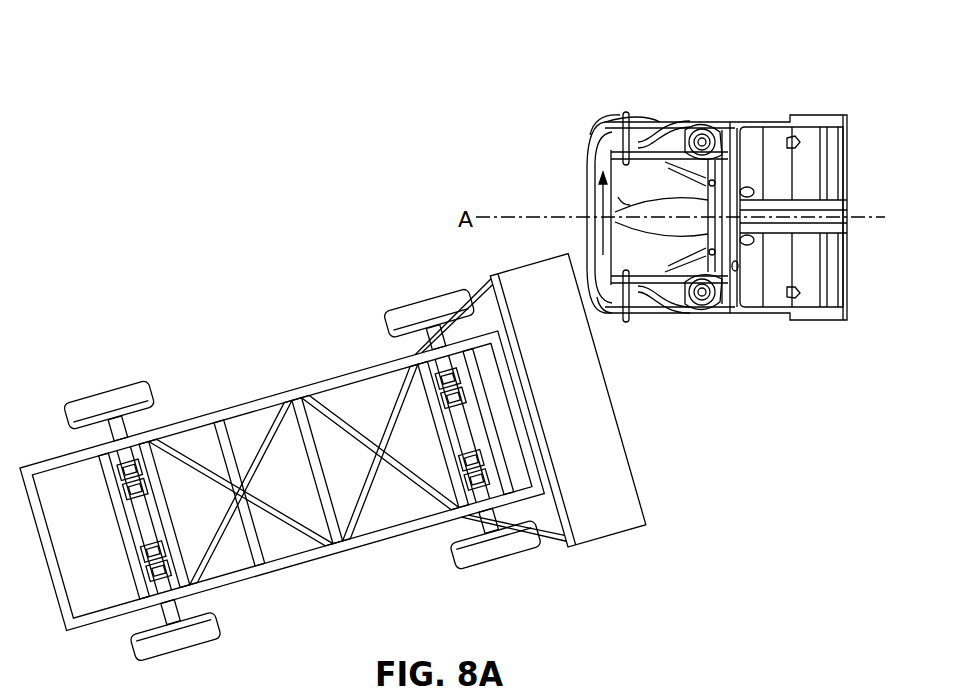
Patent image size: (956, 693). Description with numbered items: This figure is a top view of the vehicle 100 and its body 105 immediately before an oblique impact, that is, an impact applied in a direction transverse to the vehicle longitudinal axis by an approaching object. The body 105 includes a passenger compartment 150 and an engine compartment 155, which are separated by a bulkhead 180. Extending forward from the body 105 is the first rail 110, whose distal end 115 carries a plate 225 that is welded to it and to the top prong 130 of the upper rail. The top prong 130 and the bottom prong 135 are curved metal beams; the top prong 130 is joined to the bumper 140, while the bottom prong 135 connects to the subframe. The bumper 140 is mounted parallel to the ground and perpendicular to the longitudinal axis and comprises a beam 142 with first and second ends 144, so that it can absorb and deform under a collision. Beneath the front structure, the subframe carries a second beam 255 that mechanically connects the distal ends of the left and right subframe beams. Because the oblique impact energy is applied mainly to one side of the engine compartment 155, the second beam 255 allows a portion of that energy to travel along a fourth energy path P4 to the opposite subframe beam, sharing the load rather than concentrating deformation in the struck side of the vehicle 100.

The vehicle 100 is at (566, 48).
The body 105 is at (750, 97).
The first rail 110 is at (660, 160).
The distal end 115 is at (603, 137).
The top prong 130 is at (657, 122).
The bottom prong 135 is at (688, 122).
The bumper 140 is at (578, 163).
The beam 142 is at (587, 187).
The end 144 is at (607, 127).
The passenger compartment 150 is at (814, 95).
The engine compartment 155 is at (620, 100).
The bulkhead 180 is at (588, 208).
The plate 225 is at (625, 115).
The second beam 255 is at (590, 225).
The fourth energy path P4 is at (618, 197).